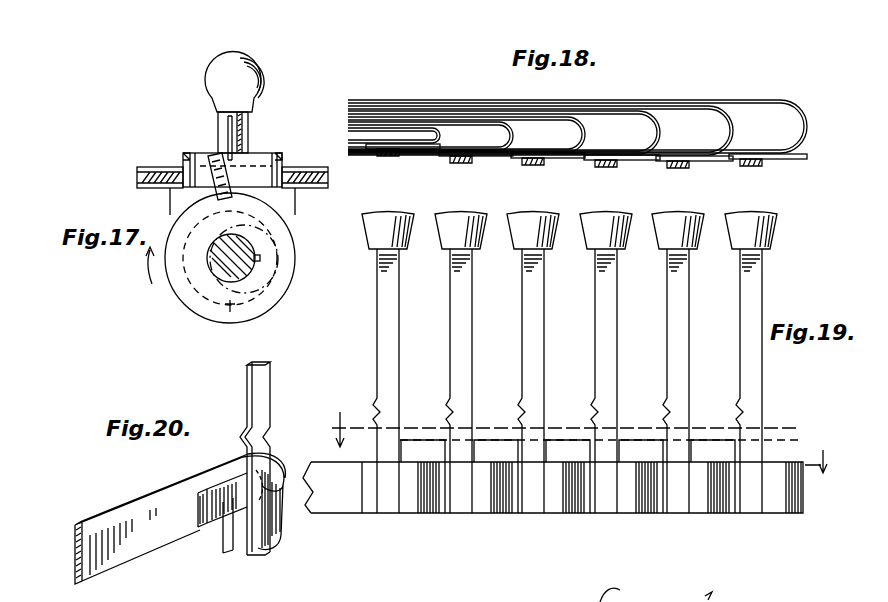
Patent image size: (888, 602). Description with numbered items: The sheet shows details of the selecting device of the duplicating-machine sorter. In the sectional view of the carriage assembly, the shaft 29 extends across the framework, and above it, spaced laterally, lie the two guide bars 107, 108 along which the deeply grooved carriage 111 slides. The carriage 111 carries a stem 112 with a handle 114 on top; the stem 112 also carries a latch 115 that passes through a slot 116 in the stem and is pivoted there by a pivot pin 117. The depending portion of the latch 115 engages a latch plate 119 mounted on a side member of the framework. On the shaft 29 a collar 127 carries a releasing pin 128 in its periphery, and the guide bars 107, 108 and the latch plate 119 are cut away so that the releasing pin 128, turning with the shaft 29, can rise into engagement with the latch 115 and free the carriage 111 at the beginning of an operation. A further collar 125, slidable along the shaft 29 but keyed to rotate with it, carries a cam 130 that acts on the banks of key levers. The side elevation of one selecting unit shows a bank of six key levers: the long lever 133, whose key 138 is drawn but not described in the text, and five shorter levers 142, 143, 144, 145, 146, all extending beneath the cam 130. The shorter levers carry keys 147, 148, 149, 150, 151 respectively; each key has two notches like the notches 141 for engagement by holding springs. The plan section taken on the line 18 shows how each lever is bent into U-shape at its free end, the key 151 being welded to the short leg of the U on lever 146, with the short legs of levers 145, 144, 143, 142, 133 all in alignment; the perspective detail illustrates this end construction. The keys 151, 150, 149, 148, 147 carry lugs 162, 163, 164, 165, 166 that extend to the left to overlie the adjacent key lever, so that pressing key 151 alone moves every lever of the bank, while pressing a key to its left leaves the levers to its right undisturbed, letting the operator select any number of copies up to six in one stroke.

In FIG. 19, the section line 18— 18 is at (581, 439).
In FIG. 17, the shaft 29 is at (228, 262).
In FIG. 17, the guide bar 107 is at (300, 175).
In FIG. 17, the guide bar 108 is at (138, 186).
In FIG. 17, the carriage 111 is at (137, 176).
In FIG. 17, the stem 112 is at (248, 118).
In FIG. 17, the handle 114 is at (244, 55).
In FIG. 17, the latch 115 is at (228, 126).
In FIG. 17, the slot 116 is at (215, 125).
In FIG. 17, the pivot pin 117 is at (218, 146).
In FIG. 17, the latch plate 119 is at (192, 166).
In FIG. 17, the collar 125 is at (230, 316).
In FIG. 17, the collar 127 is at (170, 300).
In FIG. 17, the releasing pin 128 is at (217, 202).
In FIG. 17, the cam 130 is at (281, 300).
In FIG. 18, the key lever 133 is at (352, 140).
In FIG. 19, the key lever 133 is at (405, 515).
In FIG. 18, the key 138 is at (390, 164).
In FIG. 19, the key 138 is at (390, 326).
In FIG. 19, the notches 141 is at (390, 400).
In FIG. 20, the notches 141 is at (270, 433).
In FIG. 18, the key lever 142 is at (348, 126).
In FIG. 19, the key lever 142 is at (480, 513).
In FIG. 18, the key lever 143 is at (348, 110).
In FIG. 19, the key lever 143 is at (548, 513).
In FIG. 18, the key lever 144 is at (390, 111).
In FIG. 19, the key lever 144 is at (628, 513).
In FIG. 18, the key lever 145 is at (425, 108).
In FIG. 19, the key lever 145 is at (700, 513).
In FIG. 18, the key lever 146 is at (470, 104).
In FIG. 19, the key lever 146 is at (773, 513).
In FIG. 20, the key lever 146 is at (163, 488).
In FIG. 18, the key 147 is at (463, 167).
In FIG. 19, the key 147 is at (470, 328).
In FIG. 18, the key 148 is at (540, 169).
In FIG. 19, the key 148 is at (538, 318).
In FIG. 18, the key 149 is at (610, 168).
In FIG. 19, the key 149 is at (604, 358).
In FIG. 18, the key 150 is at (684, 169).
In FIG. 19, the key 150 is at (680, 328).
In FIG. 18, the key 151 is at (754, 168).
In FIG. 19, the key 151 is at (766, 299).
In FIG. 20, the key 151 is at (245, 399).
In FIG. 18, the lug 162 is at (694, 158).
In FIG. 19, the lug 162 is at (711, 440).
In FIG. 20, the lug 162 is at (205, 522).
In FIG. 18, the lug 163 is at (622, 157).
In FIG. 19, the lug 163 is at (639, 440).
In FIG. 18, the lug 164 is at (586, 160).
In FIG. 19, the lug 164 is at (560, 438).
In FIG. 18, the lug 165 is at (522, 158).
In FIG. 19, the lug 165 is at (489, 438).
In FIG. 18, the lug 166 is at (454, 156).
In FIG. 19, the lug 166 is at (411, 438).